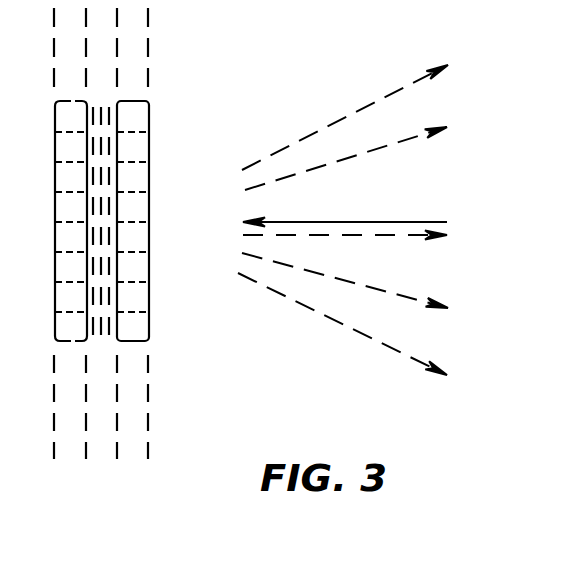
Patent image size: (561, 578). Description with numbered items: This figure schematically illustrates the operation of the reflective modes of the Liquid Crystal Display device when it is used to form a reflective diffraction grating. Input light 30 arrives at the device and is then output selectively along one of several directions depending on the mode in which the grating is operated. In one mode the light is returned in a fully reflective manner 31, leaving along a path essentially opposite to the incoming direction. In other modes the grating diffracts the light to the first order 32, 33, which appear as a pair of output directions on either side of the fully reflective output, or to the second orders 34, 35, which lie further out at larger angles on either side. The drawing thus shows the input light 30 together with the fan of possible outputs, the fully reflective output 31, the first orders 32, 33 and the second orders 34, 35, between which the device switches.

The input light 30 is at (393, 221).
The fully reflective output 31 is at (398, 236).
The first order output 32 is at (330, 162).
The first order output 33 is at (397, 296).
The second order output 34 is at (347, 118).
The second order output 35 is at (368, 338).